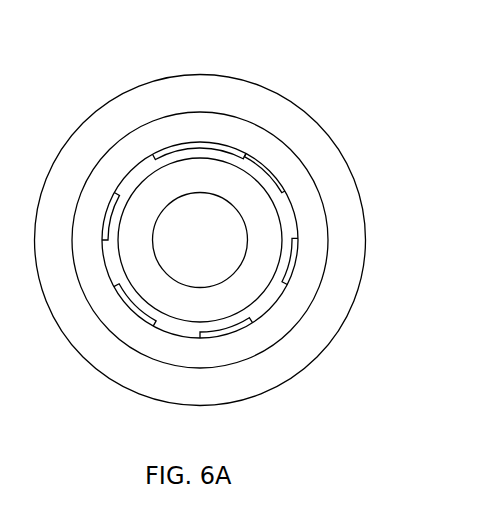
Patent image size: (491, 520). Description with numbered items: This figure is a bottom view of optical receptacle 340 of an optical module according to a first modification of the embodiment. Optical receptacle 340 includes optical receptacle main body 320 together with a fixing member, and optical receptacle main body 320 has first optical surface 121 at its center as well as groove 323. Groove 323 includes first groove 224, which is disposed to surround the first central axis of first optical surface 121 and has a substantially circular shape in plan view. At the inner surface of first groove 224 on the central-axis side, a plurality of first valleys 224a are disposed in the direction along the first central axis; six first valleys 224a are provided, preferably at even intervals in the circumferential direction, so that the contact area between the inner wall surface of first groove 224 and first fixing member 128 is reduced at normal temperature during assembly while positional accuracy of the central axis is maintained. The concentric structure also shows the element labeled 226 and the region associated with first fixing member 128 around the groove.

The optical receptacle 340 is at (331, 33).
The optical receptacle main body 320 is at (72, 345).
The annular gap 226 is at (104, 241).
The first fixing member 128 is at (172, 133).
The groove 323 is at (249, 151).
The first groove 224 is at (274, 214).
The first valley 224a is at (281, 183).
The first optical surface 121 is at (194, 232).